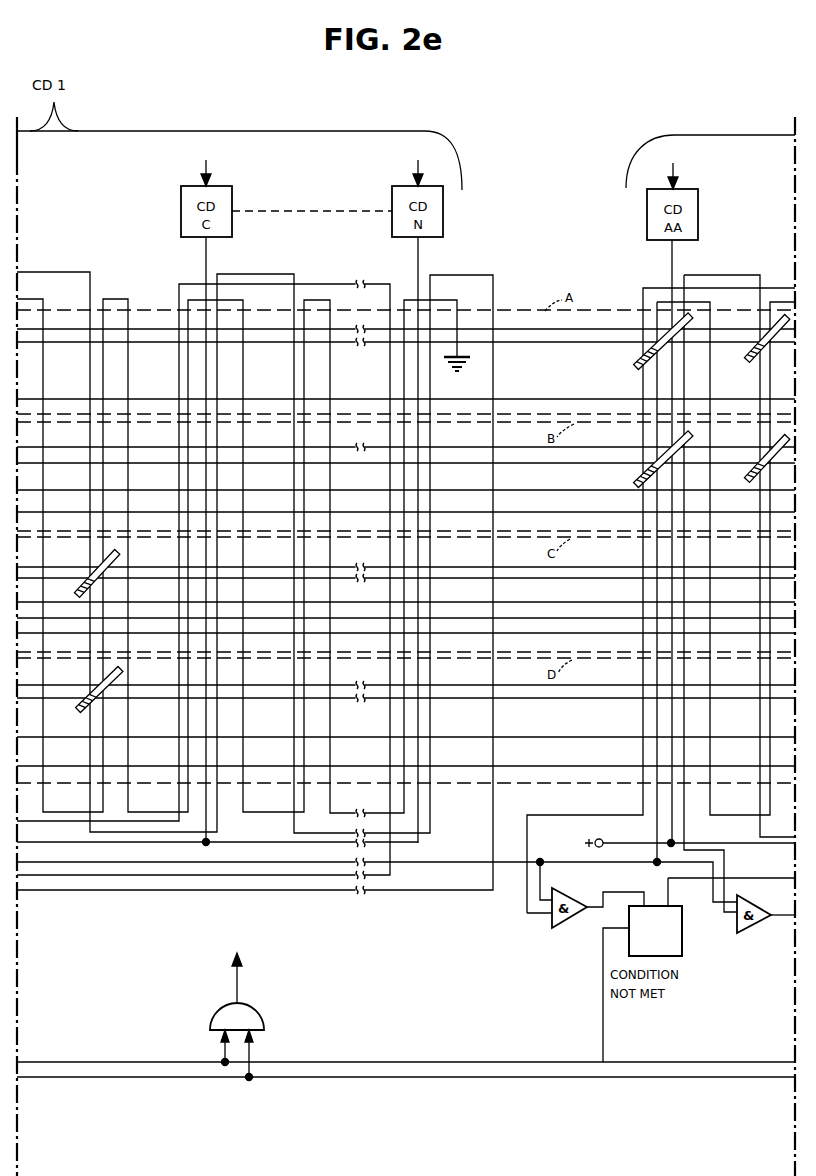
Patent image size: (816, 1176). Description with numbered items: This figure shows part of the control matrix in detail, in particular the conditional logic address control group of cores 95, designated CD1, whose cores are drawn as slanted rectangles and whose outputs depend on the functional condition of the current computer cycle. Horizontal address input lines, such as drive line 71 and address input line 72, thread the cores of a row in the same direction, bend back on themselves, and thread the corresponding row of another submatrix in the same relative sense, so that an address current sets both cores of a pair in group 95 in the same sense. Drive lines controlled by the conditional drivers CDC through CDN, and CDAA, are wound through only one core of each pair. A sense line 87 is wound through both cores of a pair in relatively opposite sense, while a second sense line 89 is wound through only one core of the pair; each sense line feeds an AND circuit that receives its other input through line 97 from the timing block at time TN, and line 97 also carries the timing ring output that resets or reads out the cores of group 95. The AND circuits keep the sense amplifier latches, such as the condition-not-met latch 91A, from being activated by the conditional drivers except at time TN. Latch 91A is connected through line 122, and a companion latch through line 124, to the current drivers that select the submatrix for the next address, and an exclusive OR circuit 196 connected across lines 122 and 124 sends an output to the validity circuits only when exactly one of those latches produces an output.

The conditional logic address control group of cores 95 is at (144, 131).
The sense line 87 is at (68, 262).
The second sense line 89 is at (315, 285).
The line from timing block TN 97 is at (100, 722).
The drive line 71 is at (82, 329).
The address input line 72 is at (50, 399).
The exclusive OR circuit 196 is at (248, 1013).
The sense amplifier latch 91A is at (682, 946).
The line 122 is at (367, 1062).
The line 124 is at (372, 1077).